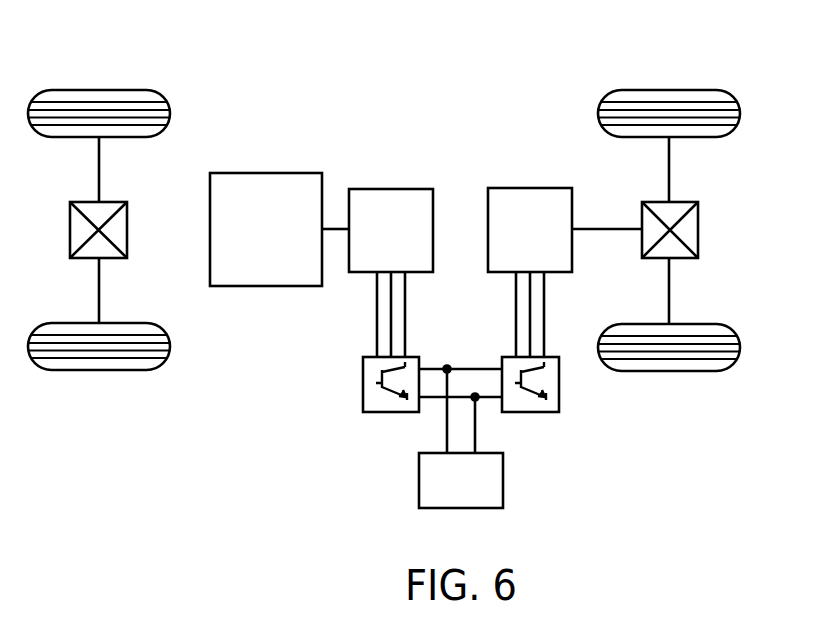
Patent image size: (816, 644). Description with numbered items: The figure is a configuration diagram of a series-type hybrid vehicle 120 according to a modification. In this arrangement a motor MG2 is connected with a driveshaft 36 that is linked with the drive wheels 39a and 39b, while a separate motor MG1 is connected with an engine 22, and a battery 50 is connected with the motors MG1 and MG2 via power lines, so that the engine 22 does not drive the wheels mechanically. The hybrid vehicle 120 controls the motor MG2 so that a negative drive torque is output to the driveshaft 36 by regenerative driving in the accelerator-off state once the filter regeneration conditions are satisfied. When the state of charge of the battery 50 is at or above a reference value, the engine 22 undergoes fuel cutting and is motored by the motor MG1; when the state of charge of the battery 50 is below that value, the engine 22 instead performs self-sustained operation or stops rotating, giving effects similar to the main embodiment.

The hybrid vehicle 120 is at (508, 78).
The engine 22 is at (266, 173).
The motor MG1 is at (391, 189).
The motor MG2 is at (531, 188).
The driveshaft 36 is at (600, 227).
The drive wheel 39a is at (670, 89).
The drive wheel 39b is at (669, 371).
The battery 50 is at (503, 481).